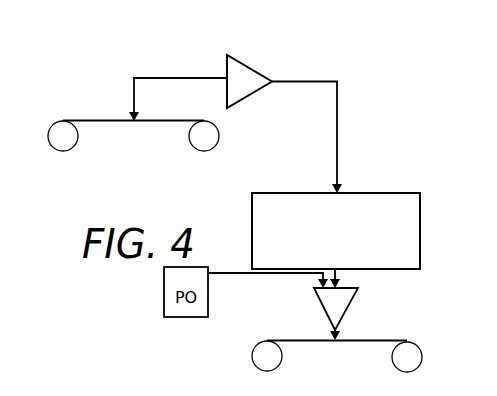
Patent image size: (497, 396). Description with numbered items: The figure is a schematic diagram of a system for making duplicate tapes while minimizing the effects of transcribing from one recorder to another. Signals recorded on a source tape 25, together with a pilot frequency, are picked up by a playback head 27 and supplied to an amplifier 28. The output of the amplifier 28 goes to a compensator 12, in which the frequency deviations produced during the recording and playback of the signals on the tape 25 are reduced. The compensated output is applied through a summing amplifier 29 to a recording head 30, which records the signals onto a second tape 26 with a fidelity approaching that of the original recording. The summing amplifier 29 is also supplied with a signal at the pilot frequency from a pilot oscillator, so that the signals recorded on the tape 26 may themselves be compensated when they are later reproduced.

The compensator 12 is at (322, 261).
The tape 25 is at (106, 128).
The tape 26 is at (305, 349).
The playback head 27 is at (138, 118).
The amplifier 28 is at (254, 71).
The summing amplifier 29 is at (356, 302).
The recording head 30 is at (340, 334).